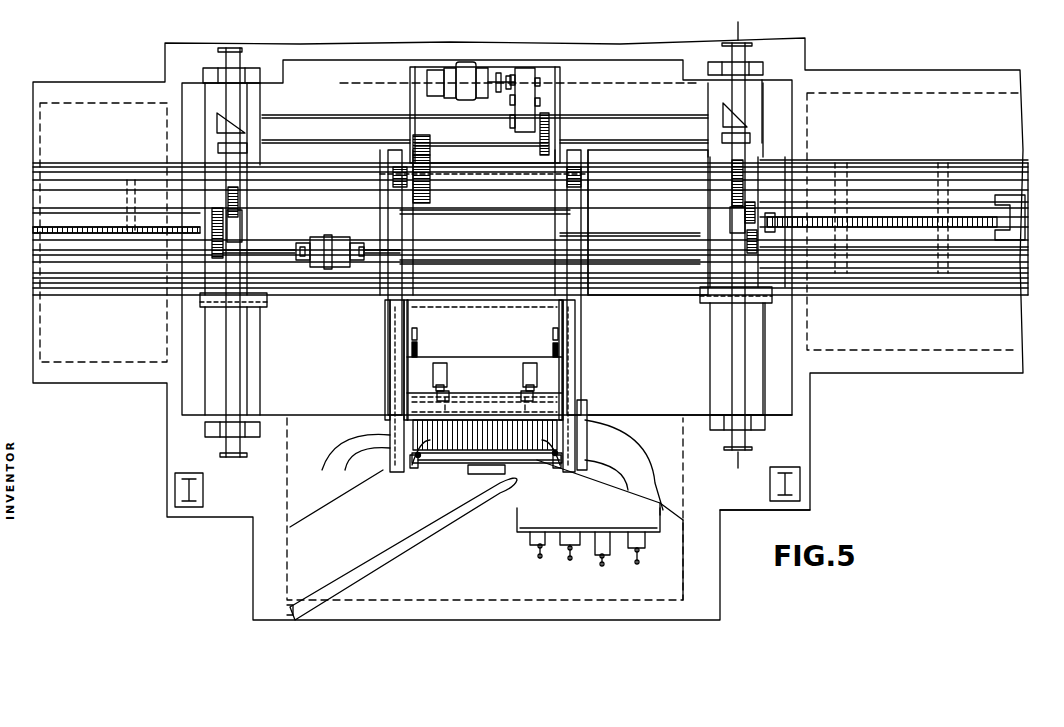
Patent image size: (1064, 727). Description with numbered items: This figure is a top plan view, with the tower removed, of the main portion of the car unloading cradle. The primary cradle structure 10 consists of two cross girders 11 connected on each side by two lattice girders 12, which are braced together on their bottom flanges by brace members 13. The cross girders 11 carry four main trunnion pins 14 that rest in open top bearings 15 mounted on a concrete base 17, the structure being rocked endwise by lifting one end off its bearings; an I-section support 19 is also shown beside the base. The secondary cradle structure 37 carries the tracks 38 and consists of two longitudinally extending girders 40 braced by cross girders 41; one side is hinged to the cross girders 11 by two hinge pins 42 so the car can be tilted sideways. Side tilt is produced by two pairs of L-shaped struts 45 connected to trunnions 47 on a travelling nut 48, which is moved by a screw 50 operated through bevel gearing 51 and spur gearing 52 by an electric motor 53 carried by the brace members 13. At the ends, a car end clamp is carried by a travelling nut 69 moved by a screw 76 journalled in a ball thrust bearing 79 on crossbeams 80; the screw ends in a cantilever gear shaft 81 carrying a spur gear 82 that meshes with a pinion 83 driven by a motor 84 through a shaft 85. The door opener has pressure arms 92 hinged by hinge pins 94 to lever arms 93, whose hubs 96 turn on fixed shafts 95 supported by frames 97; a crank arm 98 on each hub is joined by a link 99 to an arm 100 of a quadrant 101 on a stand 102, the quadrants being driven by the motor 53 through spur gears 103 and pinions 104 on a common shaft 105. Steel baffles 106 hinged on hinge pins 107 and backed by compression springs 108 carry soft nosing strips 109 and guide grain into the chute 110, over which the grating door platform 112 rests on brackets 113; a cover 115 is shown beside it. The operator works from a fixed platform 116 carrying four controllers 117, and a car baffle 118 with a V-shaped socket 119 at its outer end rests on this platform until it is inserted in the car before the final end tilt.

The primary cradle structure 10 is at (735, 30).
The cross girders 11 is at (762, 345).
The lattice girders 12 is at (650, 412).
The brace members 13 is at (410, 80).
The main trunnion pins 14 is at (745, 108).
The open top bearings 15 is at (755, 68).
The concrete base 17 is at (803, 505).
The I-beam support 19 is at (800, 481).
The secondary cradle structure 37 is at (896, 158).
The tracks 38 is at (928, 160).
The longitudinally extending girders 40 is at (968, 268).
The cross girders 41 is at (925, 255).
The hinge pins 42 is at (262, 298).
The L-shaped struts 45 is at (236, 203).
The trunnions 47 is at (243, 233).
The travelling nut 48 is at (244, 213).
The screw 50 is at (240, 258).
The bevel gearing 51 is at (226, 133).
The spur gearing 52 is at (513, 100).
The electric motor 53 is at (460, 100).
The travelling nut 69 is at (1010, 205).
The screw 76 is at (858, 217).
The ball thrust bearing 79 is at (790, 212).
The crossbeams 80 is at (755, 197).
The cantilever gear shaft 81 is at (770, 237).
The spur gear 82 is at (760, 195).
The pinion 83 is at (760, 245).
The motor 84 is at (332, 240).
The shaft 85 is at (663, 247).
The pressure arms 92 is at (528, 363).
The lever arms 93 is at (525, 393).
The hinge pin 94 is at (525, 385).
The fixed shaft 95 is at (525, 407).
The hub 96 is at (520, 432).
The frame 97 is at (582, 340).
The crank arm 98 is at (390, 440).
The link 99 is at (525, 323).
The arm 100 is at (520, 262).
The quadrant 101 is at (520, 212).
The stand 102 is at (380, 250).
The spur gears 103 is at (540, 135).
The pinions 104 is at (392, 160).
The common shaft 105 is at (445, 180).
The steel baffles 106 is at (405, 383).
The hinge pin 107 is at (417, 332).
The compression springs 108 is at (413, 470).
The nosing strips 109 is at (418, 348).
The chute 110 is at (392, 350).
The door platform 112 is at (445, 462).
The brackets 113 is at (425, 462).
The cover 115 is at (630, 462).
The fixed platform 116 is at (450, 598).
The controllers 117 is at (635, 548).
The car baffle 118 is at (385, 562).
The V-shaped socket 119 is at (288, 613).